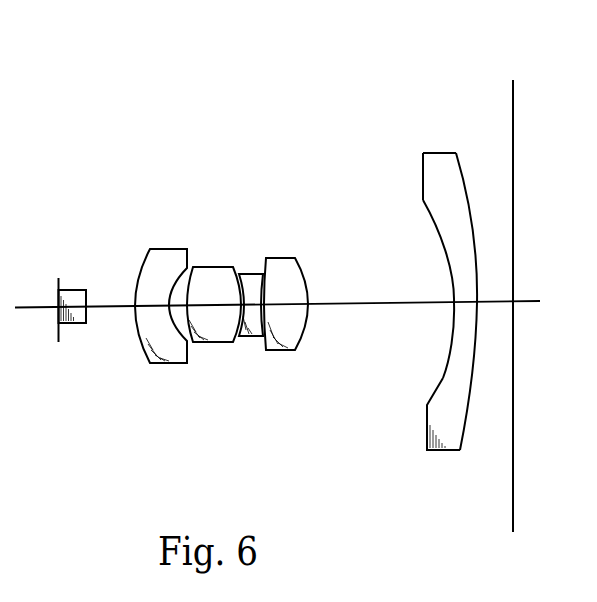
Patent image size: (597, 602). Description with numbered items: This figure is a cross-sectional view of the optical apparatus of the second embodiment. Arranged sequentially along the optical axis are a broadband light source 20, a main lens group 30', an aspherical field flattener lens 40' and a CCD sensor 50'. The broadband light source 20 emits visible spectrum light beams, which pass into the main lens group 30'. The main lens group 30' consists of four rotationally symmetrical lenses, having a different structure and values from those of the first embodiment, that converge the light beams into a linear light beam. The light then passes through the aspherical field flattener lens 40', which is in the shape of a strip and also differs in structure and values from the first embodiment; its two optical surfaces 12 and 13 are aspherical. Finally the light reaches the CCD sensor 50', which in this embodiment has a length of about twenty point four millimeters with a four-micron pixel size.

The broadband light source 20 is at (78, 272).
The main lens group 30' is at (221, 270).
The aspherical field flattener lens 40' is at (413, 268).
The optical surface 12 is at (438, 380).
The optical surface 13 is at (472, 407).
The CCD sensor 50' is at (554, 276).